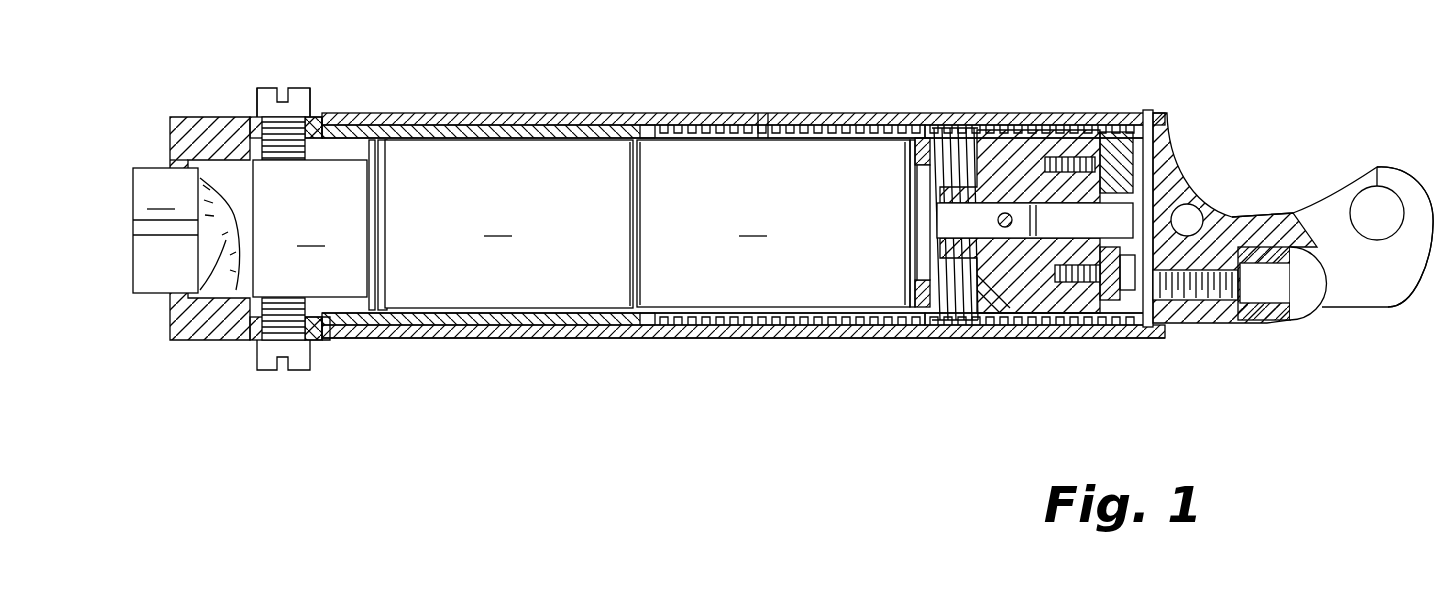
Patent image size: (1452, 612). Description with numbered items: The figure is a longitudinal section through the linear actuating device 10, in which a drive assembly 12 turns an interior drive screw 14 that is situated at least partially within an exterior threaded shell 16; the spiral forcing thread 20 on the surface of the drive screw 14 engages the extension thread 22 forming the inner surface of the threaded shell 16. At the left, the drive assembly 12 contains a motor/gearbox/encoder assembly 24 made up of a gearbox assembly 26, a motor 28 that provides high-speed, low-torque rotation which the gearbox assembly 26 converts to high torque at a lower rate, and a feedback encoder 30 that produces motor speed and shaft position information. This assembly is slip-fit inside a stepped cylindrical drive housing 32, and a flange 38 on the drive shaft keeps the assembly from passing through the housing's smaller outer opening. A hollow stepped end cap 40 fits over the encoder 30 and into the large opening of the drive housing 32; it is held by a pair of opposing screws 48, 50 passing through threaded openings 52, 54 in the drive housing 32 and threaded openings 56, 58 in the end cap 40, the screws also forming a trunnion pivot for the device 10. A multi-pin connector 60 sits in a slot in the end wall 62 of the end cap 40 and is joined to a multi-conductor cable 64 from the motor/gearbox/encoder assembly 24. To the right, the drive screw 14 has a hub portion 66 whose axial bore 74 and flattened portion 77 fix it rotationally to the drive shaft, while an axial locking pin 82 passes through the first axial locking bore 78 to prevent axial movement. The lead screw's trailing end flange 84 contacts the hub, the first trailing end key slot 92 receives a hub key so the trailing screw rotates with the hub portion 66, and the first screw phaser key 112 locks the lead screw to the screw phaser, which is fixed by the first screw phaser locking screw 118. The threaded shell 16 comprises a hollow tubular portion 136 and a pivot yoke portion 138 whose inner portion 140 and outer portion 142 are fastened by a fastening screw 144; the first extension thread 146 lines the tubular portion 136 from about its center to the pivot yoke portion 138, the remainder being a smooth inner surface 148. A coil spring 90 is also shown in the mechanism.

The actuating device 10 is at (1416, 265).
The drive assembly 12 is at (488, 96).
The drive screw 14 is at (982, 100).
The threaded shell 16 is at (1130, 100).
The spiral forcing thread 20 is at (1050, 125).
The extension thread 22 is at (1075, 125).
The motor/gearbox/encoder assembly 24 is at (628, 76).
The gearbox assembly 26 is at (773, 223).
The motor 28 is at (509, 224).
The feedback encoder 30 is at (320, 225).
The drive housing 32 is at (670, 125).
The flange 38 is at (925, 125).
The end cap 40 is at (185, 117).
The screw 48 is at (295, 366).
The screw 50 is at (265, 100).
The threaded opening 52 is at (320, 332).
The threaded opening 54 is at (277, 118).
The threaded opening 56 is at (385, 338).
The threaded opening 58 is at (318, 118).
The multi-pin connector 60 is at (165, 230).
The end wall 62 is at (168, 168).
The multi-conductor cable 64 is at (238, 266).
The hub portion 66 is at (1072, 293).
The axial bore 74 is at (1120, 222).
The flattened portion 77 is at (1040, 295).
The first axial locking bore 78 is at (1010, 165).
The axial locking pin 82 is at (997, 220).
The trailing end flange 84 is at (1153, 337).
The coil spring 90 is at (960, 140).
The first trailing end key slot 92 is at (985, 310).
The first screw phaser key 112 is at (1123, 145).
The first screw phaser locking screw 118 is at (1223, 327).
The hollow tubular portion 136 is at (588, 338).
The pivot yoke portion 138 is at (1268, 215).
The inner portion 140 is at (1350, 185).
The outer portion 142 is at (1352, 300).
The fastening screw 144 is at (1300, 298).
The first extension thread 146 is at (763, 125).
The smooth inner surface 148 is at (590, 125).